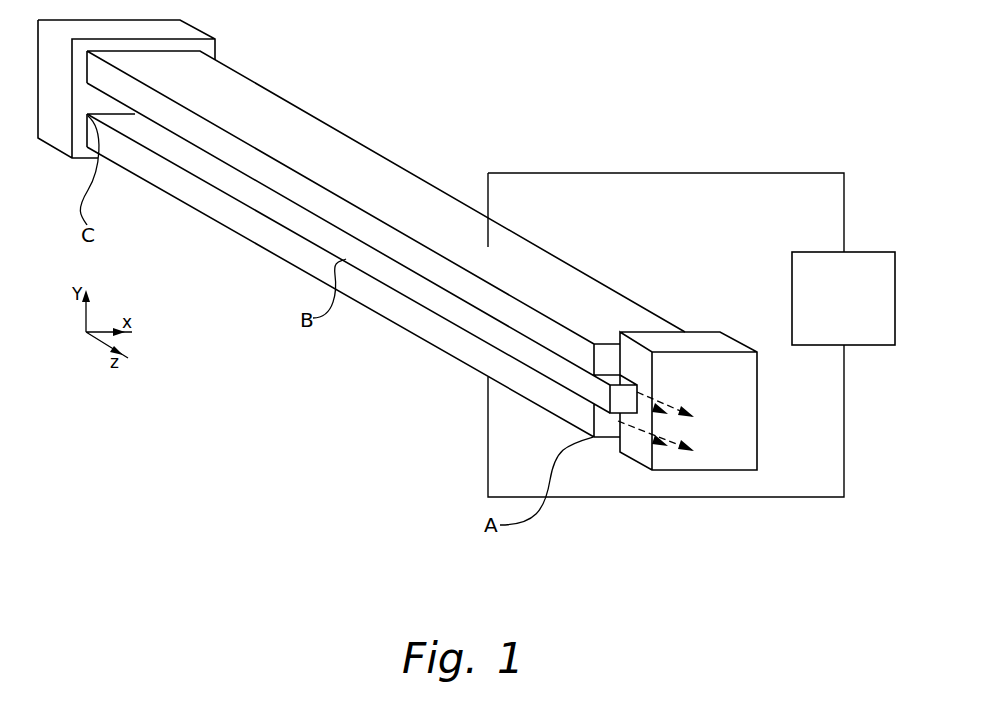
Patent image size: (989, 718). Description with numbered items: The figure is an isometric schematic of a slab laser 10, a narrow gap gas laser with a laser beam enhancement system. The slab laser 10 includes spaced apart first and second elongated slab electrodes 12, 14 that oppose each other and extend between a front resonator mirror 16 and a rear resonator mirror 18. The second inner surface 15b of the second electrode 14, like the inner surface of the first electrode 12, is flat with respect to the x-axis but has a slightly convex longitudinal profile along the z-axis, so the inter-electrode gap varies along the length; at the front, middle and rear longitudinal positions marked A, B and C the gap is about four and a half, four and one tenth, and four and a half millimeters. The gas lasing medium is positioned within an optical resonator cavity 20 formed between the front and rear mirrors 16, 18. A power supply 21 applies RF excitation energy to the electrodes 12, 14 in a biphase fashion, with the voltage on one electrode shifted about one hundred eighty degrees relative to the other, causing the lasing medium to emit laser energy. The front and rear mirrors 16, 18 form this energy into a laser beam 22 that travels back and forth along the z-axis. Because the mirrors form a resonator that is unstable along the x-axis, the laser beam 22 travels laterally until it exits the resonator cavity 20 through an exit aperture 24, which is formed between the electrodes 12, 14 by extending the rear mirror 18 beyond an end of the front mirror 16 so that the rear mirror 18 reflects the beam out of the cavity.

The slab laser 10 is at (508, 102).
The first elongated slab electrode 12 is at (333, 148).
The second elongated slab electrode 14 is at (262, 236).
The second inner surface 15b is at (213, 219).
The front resonator mirror 16 is at (728, 342).
The rear resonator mirror 18 is at (62, 132).
The optical resonator cavity 20 is at (178, 152).
The power supply 21 is at (827, 252).
The laser beam 22 is at (623, 402).
The exit aperture 24 is at (577, 380).